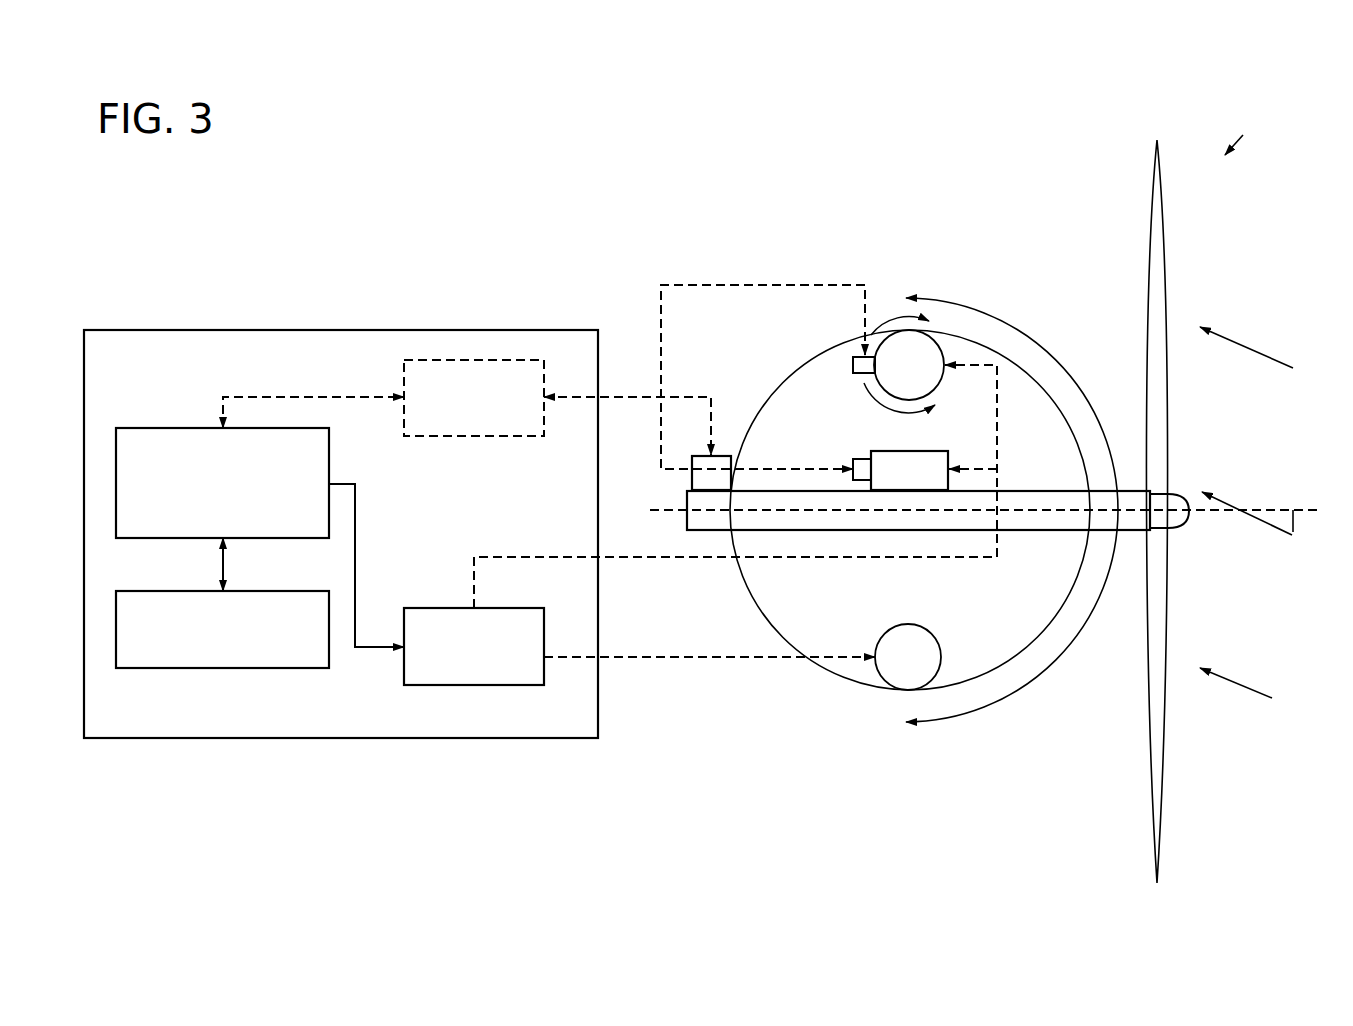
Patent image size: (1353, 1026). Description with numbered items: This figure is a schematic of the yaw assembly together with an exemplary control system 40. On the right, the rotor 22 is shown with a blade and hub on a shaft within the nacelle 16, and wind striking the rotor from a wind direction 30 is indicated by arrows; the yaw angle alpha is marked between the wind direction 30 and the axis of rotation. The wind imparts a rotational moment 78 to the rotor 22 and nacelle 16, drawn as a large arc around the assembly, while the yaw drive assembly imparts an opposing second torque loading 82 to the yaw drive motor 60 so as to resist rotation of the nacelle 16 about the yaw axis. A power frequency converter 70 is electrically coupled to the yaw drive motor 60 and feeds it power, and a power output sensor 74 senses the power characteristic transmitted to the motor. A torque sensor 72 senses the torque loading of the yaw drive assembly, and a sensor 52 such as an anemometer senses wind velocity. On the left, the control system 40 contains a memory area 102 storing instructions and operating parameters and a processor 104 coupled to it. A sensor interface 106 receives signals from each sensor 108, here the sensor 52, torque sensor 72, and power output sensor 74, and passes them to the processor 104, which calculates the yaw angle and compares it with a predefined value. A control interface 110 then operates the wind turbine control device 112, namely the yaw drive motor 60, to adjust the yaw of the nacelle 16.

The nacelle 16 is at (1135, 531).
The rotor 22 is at (1243, 135).
The wind direction 30 is at (1250, 347).
The control system 40 is at (352, 330).
The sensor 52 is at (692, 478).
The yaw drive motor 60 is at (928, 627).
The power frequency converter 70 is at (949, 462).
The torque sensor 72 is at (853, 368).
The power output sensor 74 is at (862, 459).
The rotational moment 78 is at (993, 313).
The second torque loading 82 is at (902, 326).
The memory area 102 is at (178, 668).
The processor 104 is at (178, 428).
The sensor interface 106 is at (473, 360).
The sensor 108 is at (794, 343).
The control interface 110 is at (442, 608).
The wind turbine control device 112 is at (954, 645).